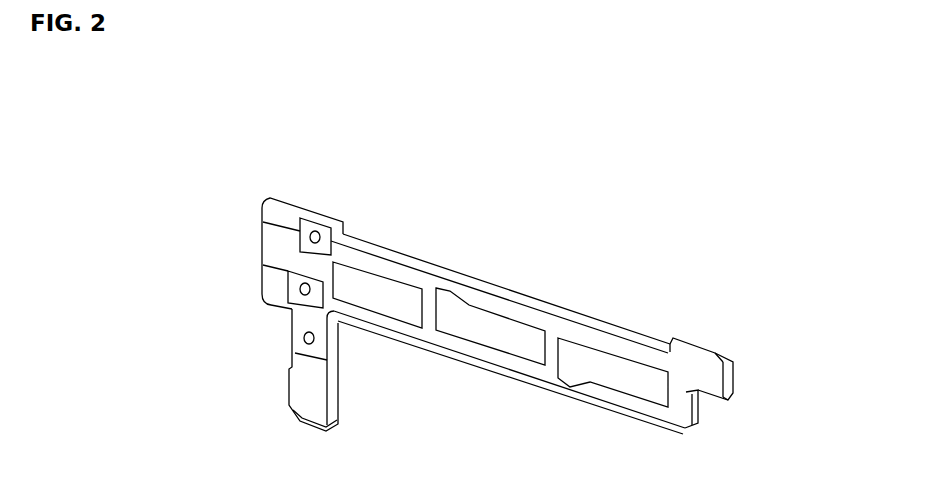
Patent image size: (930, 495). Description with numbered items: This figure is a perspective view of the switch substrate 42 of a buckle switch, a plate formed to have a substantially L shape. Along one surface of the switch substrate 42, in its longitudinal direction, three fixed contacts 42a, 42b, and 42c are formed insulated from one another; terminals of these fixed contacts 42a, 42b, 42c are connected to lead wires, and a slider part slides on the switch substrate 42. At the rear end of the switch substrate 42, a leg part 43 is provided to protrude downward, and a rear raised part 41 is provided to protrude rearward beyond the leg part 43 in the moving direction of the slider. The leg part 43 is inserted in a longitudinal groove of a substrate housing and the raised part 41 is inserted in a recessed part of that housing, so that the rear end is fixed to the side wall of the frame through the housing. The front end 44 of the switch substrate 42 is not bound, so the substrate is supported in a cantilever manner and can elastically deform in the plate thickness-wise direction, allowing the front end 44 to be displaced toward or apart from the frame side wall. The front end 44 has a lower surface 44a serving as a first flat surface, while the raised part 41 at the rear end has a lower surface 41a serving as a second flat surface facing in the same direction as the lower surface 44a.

The raised part 41 is at (275, 250).
The lower surface of the raised part 41a is at (277, 307).
The switch substrate 42 is at (702, 342).
The fixed contact 42a is at (617, 370).
The fixed contact 42b is at (503, 332).
The fixed contact 42c is at (395, 297).
The leg part 43 is at (310, 393).
The front end 44 is at (705, 377).
The lower surface of the front end 44a is at (706, 398).